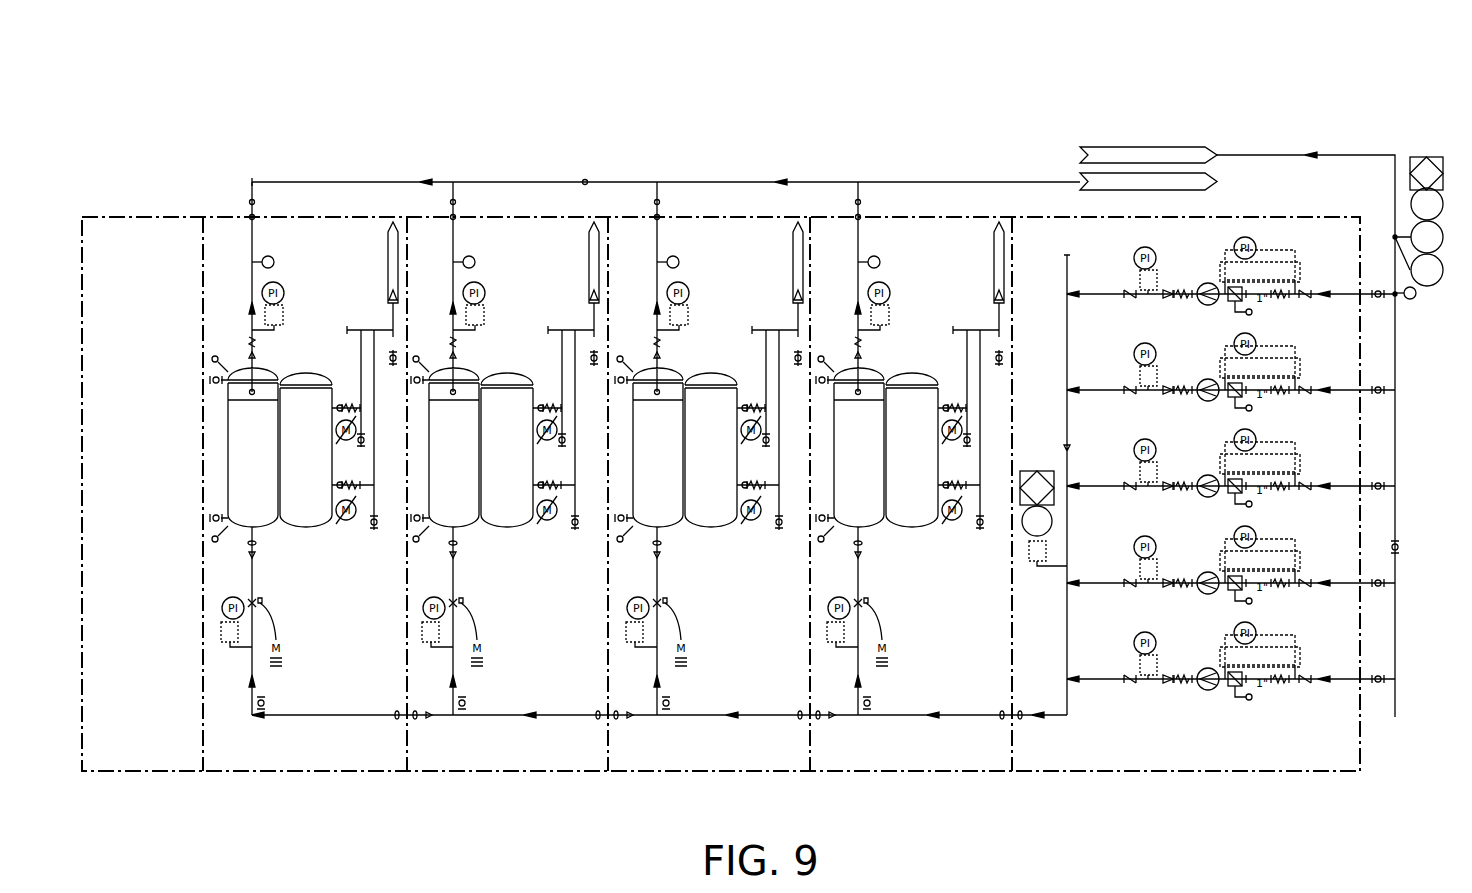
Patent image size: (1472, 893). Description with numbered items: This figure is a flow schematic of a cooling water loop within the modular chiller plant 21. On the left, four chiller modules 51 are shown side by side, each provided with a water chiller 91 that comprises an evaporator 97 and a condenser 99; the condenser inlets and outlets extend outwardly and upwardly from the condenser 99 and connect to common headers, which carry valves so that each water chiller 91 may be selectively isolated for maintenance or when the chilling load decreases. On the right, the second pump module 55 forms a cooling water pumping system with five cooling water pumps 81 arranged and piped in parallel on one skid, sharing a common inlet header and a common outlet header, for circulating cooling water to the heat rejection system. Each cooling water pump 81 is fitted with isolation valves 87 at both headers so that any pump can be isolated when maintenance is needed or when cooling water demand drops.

The modular chiller plant 21 is at (930, 123).
The chiller module 51 is at (607, 501).
The second pump module 55 is at (1209, 529).
The cooling water pump 81 is at (1210, 691).
The isolation valve 87 is at (1135, 683).
The water chiller 91 is at (224, 460).
The evaporator 97 is at (318, 528).
The condenser 99 is at (227, 418).